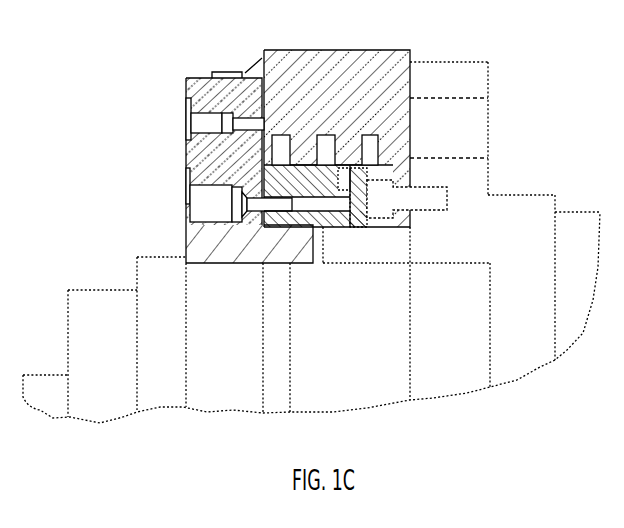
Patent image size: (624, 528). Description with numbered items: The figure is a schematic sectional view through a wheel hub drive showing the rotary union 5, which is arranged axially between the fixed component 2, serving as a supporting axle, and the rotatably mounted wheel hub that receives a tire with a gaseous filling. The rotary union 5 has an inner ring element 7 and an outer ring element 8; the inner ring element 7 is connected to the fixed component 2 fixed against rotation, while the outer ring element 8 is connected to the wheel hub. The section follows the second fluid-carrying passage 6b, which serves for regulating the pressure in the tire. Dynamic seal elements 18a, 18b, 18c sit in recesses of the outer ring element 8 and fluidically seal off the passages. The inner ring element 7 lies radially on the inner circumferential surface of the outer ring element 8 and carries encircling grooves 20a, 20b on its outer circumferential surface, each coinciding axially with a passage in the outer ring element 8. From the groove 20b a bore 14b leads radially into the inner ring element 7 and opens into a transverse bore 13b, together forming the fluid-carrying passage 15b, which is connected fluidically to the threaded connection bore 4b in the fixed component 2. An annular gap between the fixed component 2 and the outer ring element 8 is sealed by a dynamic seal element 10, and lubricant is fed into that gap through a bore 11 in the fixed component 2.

The fixed component 2 is at (186, 167).
The threaded connection bore 4b is at (207, 222).
The rotary union 5 is at (310, 29).
The second fluid-carrying passage 6b is at (352, 215).
The inner ring element 7 is at (292, 184).
The outer ring element 8 is at (397, 62).
The dynamic seal element 10 is at (240, 70).
The bore 11 is at (198, 125).
The transverse bore 13b is at (313, 222).
The bore 14b is at (368, 220).
The fluid-carrying passage 15b is at (295, 201).
The dynamic seal element 18a is at (280, 143).
The dynamic seal element 18b is at (328, 137).
The dynamic seal element 18c is at (377, 145).
The encircling groove 20a is at (300, 162).
The encircling groove 20b is at (348, 162).